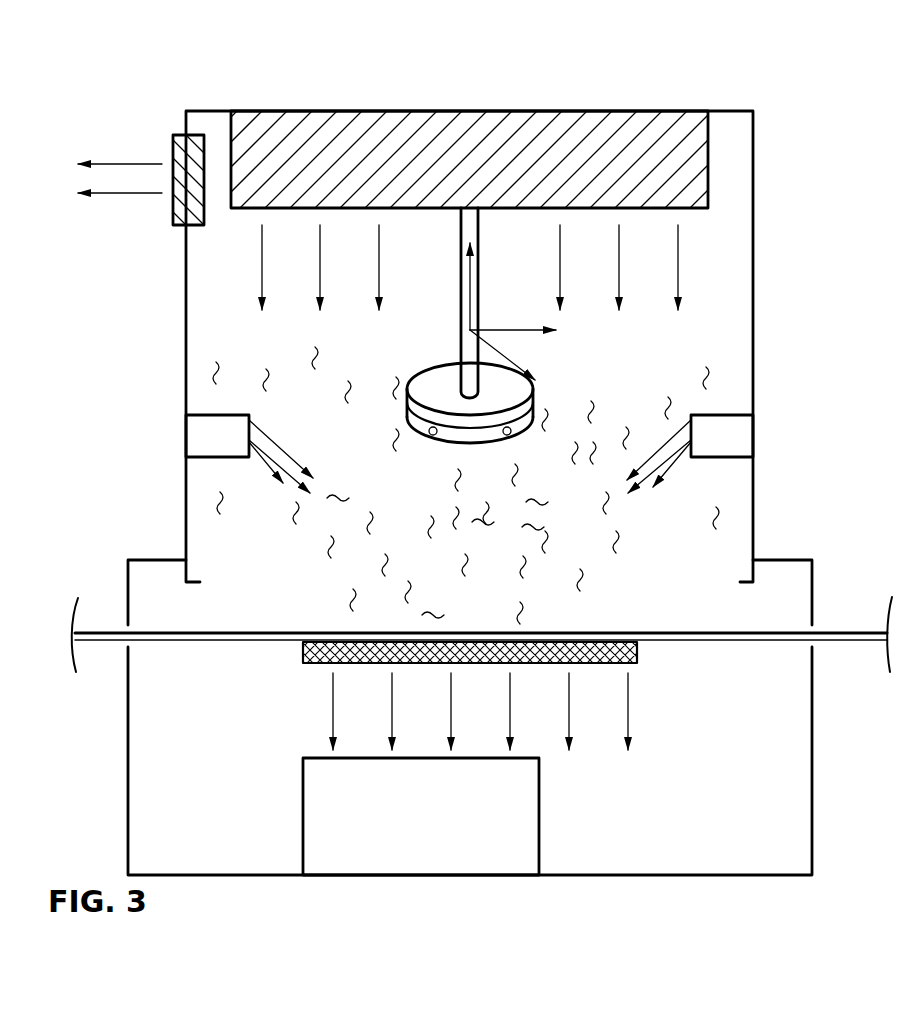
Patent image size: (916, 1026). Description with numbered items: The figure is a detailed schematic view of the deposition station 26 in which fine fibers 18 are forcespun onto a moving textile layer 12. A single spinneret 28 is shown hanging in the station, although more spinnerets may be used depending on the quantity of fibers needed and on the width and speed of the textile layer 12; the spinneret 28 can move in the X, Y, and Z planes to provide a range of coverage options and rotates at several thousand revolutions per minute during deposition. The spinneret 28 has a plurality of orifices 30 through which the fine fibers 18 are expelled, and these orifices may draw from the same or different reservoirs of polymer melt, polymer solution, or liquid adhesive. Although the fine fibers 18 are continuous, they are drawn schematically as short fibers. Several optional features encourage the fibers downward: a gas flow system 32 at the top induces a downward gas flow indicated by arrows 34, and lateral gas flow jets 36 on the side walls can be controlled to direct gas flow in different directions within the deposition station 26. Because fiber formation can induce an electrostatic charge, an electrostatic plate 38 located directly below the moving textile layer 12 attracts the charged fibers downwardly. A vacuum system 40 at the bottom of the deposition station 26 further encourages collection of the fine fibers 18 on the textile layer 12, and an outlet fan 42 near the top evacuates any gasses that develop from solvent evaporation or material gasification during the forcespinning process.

The textile layer 12 is at (118, 637).
The fine fibers 18 is at (614, 388).
The deposition station 26 is at (468, 105).
The spinneret 28 is at (432, 377).
The orifices 30 is at (433, 440).
The gas flow system 32 is at (316, 130).
The arrows 34 is at (678, 256).
The lateral gas flow jets 36 is at (200, 430).
The electrostatic plate 38 is at (637, 660).
The vacuum system 40 is at (421, 816).
The outlet fan 42 is at (177, 155).